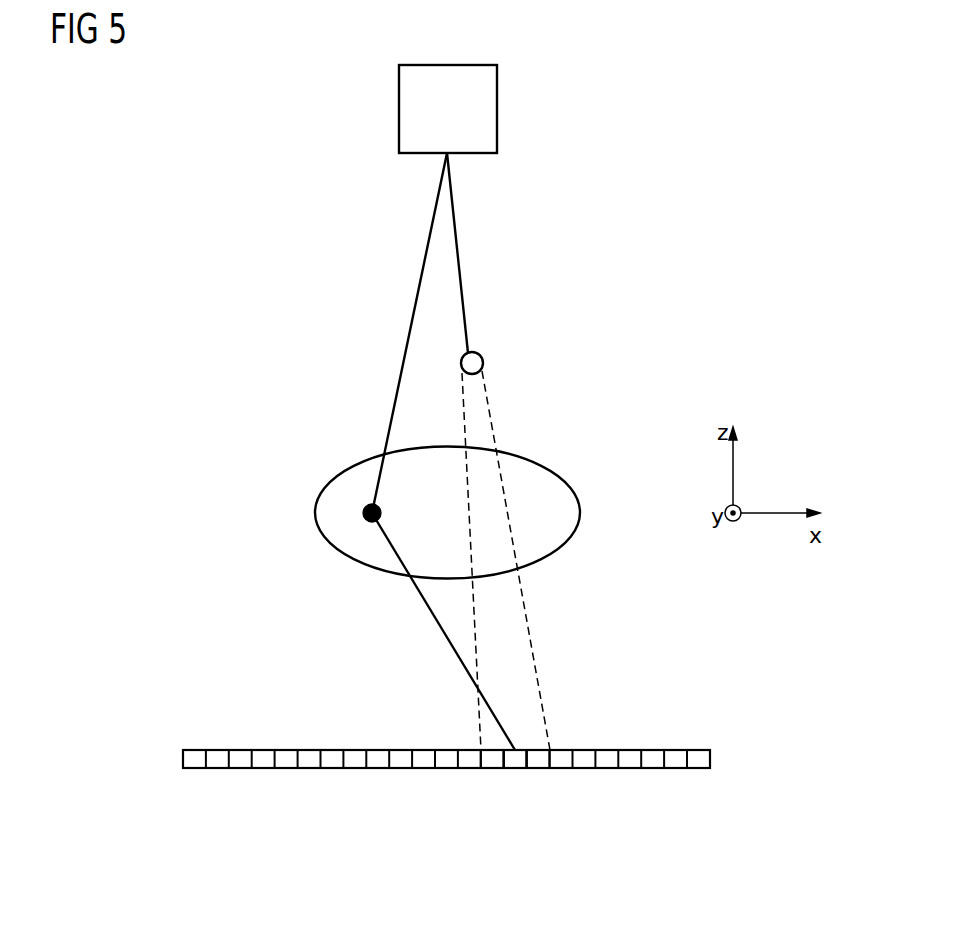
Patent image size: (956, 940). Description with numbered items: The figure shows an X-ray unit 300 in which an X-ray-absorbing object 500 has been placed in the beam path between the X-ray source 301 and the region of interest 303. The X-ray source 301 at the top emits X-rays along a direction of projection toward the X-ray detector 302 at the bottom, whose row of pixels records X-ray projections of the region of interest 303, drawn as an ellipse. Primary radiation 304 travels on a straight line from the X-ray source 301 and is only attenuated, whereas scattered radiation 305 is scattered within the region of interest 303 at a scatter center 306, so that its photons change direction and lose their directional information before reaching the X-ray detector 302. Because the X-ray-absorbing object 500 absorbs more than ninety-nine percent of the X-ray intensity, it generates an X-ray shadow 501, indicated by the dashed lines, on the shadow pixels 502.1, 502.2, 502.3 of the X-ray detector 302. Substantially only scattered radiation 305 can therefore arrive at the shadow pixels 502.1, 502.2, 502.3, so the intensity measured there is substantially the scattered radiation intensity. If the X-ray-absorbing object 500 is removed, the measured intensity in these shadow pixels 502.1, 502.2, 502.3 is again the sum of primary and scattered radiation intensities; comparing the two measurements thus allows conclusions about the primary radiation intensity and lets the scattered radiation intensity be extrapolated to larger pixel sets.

The X-ray unit 300 is at (682, 88).
The X-ray source 301 is at (497, 108).
The X-ray detector 302 is at (710, 757).
The region of interest 303 is at (580, 510).
The primary radiation 304 is at (460, 258).
The scattered radiation 305 is at (450, 644).
The scatter center 306 is at (363, 513).
The X-ray-absorbing object 500 is at (484, 362).
The X-ray shadow 501 is at (513, 657).
The shadow pixel 502.1 is at (493, 768).
The shadow pixel 502.2 is at (517, 768).
The shadow pixel 502.3 is at (540, 768).